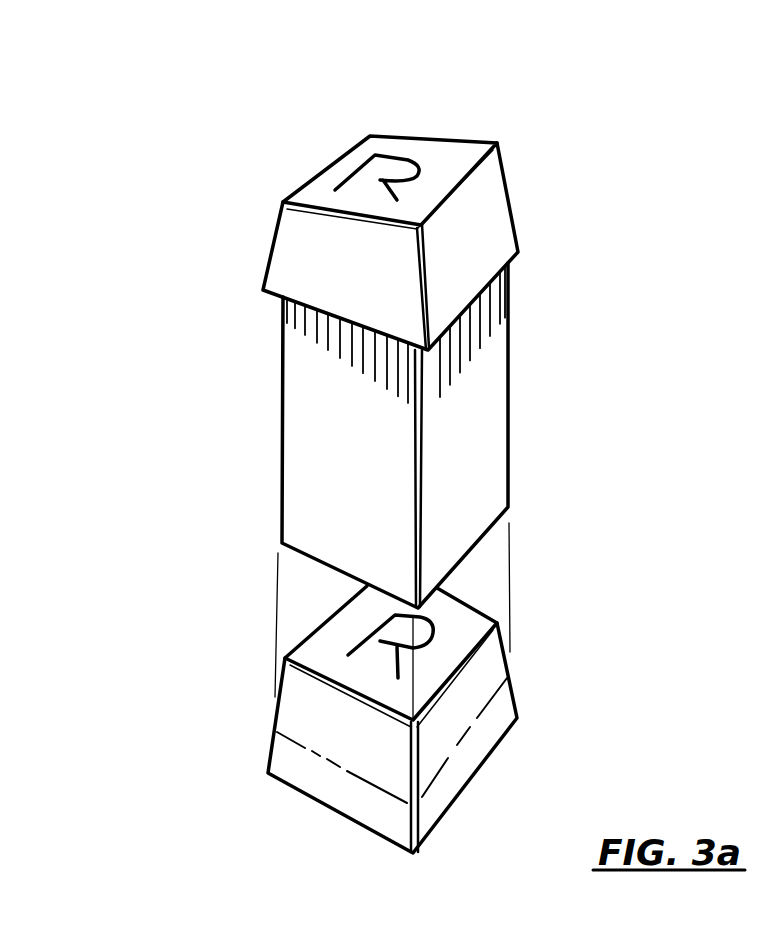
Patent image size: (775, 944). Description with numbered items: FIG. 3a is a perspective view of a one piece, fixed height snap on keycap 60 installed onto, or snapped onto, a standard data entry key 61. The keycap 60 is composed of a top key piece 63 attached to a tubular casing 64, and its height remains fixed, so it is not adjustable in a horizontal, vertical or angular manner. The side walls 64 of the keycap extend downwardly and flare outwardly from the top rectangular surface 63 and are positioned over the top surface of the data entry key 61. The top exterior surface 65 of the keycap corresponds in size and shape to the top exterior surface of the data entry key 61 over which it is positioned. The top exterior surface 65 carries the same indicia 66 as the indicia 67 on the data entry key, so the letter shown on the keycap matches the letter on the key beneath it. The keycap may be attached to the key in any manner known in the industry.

The fixed height snap on keycap 60 is at (182, 380).
The data entry key 61 is at (295, 763).
The top key piece 63 is at (487, 202).
The tubular casing 64 is at (372, 410).
The top exterior surface 65 is at (458, 152).
The indicia 66 is at (377, 157).
The indicia on the data entry key 67 is at (372, 637).